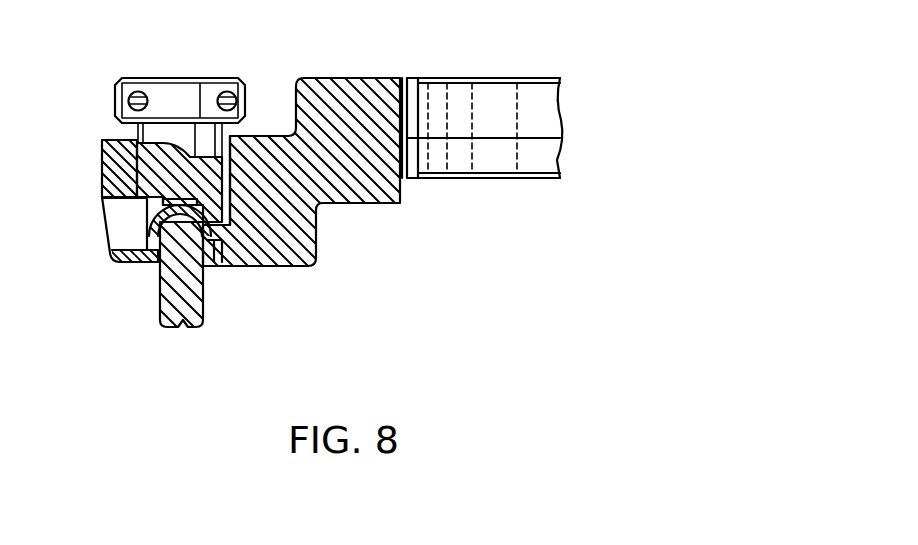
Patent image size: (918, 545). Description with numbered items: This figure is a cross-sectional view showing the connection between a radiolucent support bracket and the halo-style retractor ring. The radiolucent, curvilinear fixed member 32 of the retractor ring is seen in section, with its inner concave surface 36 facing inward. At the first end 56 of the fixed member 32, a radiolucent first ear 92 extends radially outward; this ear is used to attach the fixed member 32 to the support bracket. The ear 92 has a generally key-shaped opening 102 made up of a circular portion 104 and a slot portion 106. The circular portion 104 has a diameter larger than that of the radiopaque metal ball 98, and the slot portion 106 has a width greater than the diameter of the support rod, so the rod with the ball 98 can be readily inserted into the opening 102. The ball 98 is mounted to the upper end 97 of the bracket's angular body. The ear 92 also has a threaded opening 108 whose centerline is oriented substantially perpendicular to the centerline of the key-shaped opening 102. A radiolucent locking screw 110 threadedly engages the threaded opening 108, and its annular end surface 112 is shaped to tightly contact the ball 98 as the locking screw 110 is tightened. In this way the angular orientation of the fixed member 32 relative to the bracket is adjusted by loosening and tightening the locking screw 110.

The fixed member 32 is at (522, 72).
The inner concave surface 36 is at (508, 123).
The first end 56 is at (345, 77).
The first ear 92 is at (102, 160).
The upper end 97 is at (203, 303).
The ball 98 is at (112, 221).
The key-shaped opening 102 is at (98, 228).
The circular portion 104 is at (112, 242).
The slot portion 106 is at (140, 266).
The threaded opening 108 is at (252, 135).
The locking screw 110 is at (156, 76).
The annular end surface 112 is at (225, 266).